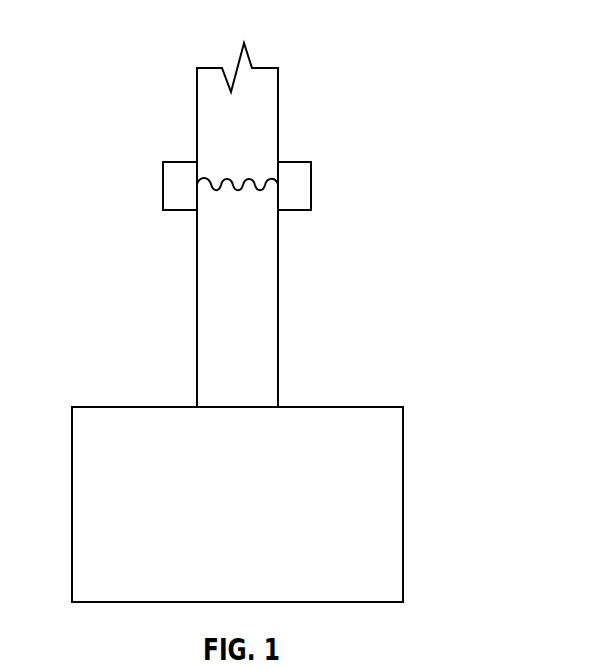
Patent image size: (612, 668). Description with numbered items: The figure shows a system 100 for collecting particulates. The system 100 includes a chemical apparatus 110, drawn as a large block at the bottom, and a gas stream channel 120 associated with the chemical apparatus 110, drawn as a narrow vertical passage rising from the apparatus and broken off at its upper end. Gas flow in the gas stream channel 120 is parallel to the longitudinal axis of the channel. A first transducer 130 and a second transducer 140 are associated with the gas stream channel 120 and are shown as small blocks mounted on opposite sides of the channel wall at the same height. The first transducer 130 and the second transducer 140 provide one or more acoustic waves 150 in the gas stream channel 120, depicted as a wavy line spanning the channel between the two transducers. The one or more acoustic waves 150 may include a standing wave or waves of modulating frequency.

The system 100 is at (120, 46).
The chemical apparatus 110 is at (403, 503).
The gas stream channel 120 is at (278, 327).
The first transducer 130 is at (177, 195).
The second transducer 140 is at (298, 190).
The acoustic waves 150 is at (252, 177).